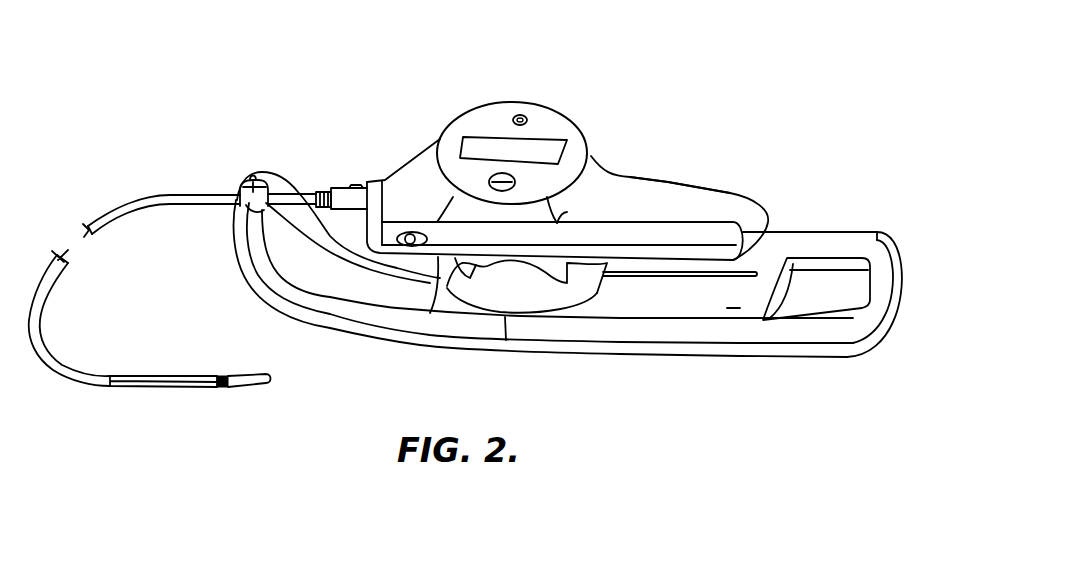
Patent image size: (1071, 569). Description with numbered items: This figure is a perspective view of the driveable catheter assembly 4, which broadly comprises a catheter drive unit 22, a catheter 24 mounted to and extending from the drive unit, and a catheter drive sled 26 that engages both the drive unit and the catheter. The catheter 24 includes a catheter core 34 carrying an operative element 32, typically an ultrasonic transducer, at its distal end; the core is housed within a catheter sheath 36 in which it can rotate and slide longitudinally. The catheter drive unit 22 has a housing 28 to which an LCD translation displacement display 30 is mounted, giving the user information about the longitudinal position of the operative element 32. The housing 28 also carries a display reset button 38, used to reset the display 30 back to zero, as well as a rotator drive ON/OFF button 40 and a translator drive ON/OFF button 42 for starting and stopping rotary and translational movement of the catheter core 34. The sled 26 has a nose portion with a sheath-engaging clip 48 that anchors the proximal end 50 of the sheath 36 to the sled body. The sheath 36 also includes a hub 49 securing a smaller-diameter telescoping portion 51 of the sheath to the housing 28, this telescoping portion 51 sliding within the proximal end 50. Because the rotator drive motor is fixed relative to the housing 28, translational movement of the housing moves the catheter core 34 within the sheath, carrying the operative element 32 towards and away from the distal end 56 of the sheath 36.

The driveable catheter assembly 4 is at (739, 40).
The catheter drive unit 22 is at (628, 127).
The catheter 24 is at (139, 184).
The catheter drive sled 26 is at (580, 378).
The housing 28 is at (669, 190).
The LCD translation displacement display 30 is at (544, 148).
The operative element 32 is at (221, 388).
The catheter core 34 is at (67, 254).
The catheter sheath 36 is at (79, 367).
The display reset button 38 is at (520, 116).
The rotator drive ON/OFF button 40 is at (411, 246).
The translator drive ON/OFF button 42 is at (441, 140).
The sheath-engaging clip 48 is at (252, 176).
The hub 49 is at (354, 191).
The proximal end 50 is at (182, 204).
The telescoping portion 51 is at (303, 195).
The distal end 56 is at (268, 383).